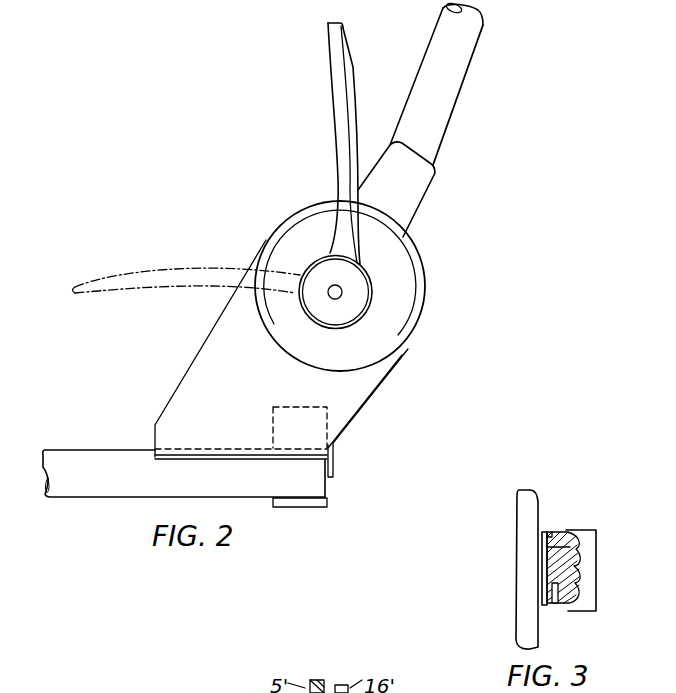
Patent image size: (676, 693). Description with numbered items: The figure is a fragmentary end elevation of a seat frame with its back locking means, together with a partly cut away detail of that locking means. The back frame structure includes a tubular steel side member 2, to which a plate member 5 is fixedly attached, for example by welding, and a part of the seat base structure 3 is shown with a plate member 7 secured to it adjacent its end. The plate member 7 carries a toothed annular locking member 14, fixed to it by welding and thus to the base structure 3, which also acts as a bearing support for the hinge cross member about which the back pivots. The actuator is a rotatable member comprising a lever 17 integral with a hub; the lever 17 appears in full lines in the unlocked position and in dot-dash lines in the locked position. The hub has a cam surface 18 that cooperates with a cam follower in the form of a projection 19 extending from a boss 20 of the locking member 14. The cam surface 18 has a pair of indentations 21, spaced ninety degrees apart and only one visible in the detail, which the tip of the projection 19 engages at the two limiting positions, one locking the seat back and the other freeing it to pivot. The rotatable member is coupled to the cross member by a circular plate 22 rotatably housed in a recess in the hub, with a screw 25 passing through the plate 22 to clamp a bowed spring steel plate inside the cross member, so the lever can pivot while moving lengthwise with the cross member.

In FIG. 2, the tubular steel side member 2 is at (467, 55).
In FIG. 2, the seat base structure 3 is at (105, 460).
In FIG. 2, the plate member 5 is at (427, 180).
In FIG. 2, the plate member 7 is at (390, 333).
In FIG. 3, the plate member 7 is at (532, 512).
In FIG. 3, the toothed annular locking member 14 is at (553, 598).
In FIG. 2, the lever 17 is at (343, 77).
In FIG. 3, the lever 17 is at (585, 598).
In FIG. 3, the cam surface 18 is at (567, 552).
In FIG. 3, the projection 19 is at (557, 603).
In FIG. 3, the boss 20 is at (552, 535).
In FIG. 3, the indentation 21 is at (567, 568).
In FIG. 2, the circular plate 22 is at (357, 282).
In FIG. 2, the screw 25 is at (342, 295).